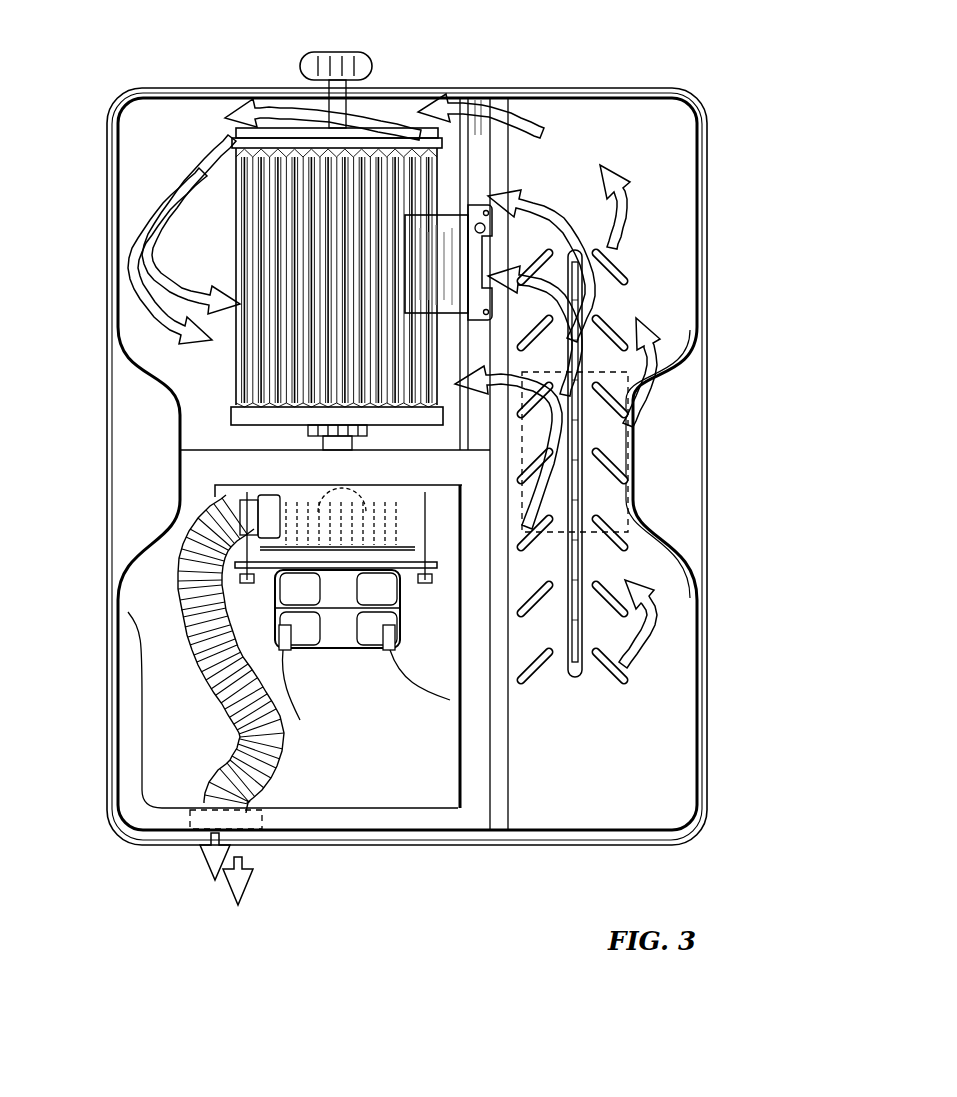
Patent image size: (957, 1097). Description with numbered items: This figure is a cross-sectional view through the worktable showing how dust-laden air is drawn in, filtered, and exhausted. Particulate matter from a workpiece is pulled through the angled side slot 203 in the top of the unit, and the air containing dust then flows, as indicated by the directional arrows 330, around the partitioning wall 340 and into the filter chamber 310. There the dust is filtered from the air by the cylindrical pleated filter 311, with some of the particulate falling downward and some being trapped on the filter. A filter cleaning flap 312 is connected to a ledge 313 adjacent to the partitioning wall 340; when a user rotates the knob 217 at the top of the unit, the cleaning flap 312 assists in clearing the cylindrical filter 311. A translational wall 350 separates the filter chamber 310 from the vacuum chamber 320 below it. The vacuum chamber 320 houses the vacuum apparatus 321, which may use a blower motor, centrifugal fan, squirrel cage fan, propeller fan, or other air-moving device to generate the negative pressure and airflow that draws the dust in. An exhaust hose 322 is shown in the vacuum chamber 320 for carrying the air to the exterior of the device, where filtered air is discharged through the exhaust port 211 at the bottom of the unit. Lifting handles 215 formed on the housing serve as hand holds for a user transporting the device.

The filter chamber 310 is at (155, 117).
The knob 217 is at (352, 57).
The filter cleaning flap 312 is at (455, 215).
The ledge 313 is at (485, 130).
The directional arrows 330 is at (628, 192).
The cylindrical pleated filter 311 is at (255, 197).
The lifting handles 215 is at (680, 445).
The translational wall 350 is at (193, 465).
The exhaust hose 322 is at (205, 578).
The vacuum chamber 320 is at (158, 735).
The angled side slot 203 is at (628, 684).
The exhaust port 211 is at (262, 815).
The vacuum apparatus 321 is at (345, 628).
The partitioning wall 340 is at (513, 812).